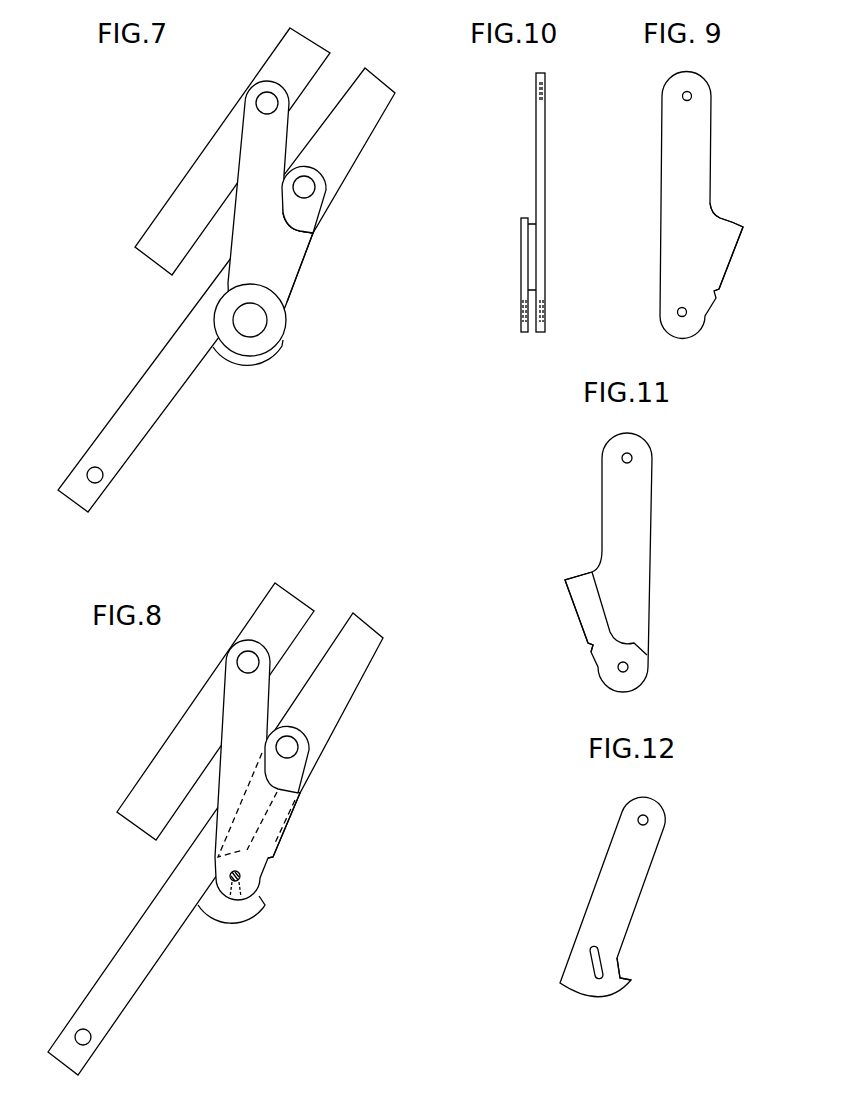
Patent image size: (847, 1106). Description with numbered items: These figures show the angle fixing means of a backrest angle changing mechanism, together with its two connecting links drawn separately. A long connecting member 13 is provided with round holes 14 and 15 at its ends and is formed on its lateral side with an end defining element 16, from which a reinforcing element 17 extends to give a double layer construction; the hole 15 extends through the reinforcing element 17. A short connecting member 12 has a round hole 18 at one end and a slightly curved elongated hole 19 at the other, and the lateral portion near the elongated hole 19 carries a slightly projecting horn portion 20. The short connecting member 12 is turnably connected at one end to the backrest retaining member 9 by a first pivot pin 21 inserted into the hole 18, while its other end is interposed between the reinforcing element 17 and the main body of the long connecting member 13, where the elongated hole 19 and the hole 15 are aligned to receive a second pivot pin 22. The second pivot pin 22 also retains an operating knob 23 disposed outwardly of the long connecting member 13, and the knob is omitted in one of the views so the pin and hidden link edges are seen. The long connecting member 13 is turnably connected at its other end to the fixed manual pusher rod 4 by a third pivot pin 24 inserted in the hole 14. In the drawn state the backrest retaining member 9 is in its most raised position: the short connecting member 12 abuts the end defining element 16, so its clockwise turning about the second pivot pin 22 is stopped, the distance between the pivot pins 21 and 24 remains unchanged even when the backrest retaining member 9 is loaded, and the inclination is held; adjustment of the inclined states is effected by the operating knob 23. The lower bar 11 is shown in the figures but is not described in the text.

In FIG. 7, the manual pusher rod 4 is at (170, 195).
In FIG. 8, the manual pusher rod 4 is at (160, 750).
In FIG. 7, the backrest retaining member 9 is at (383, 123).
In FIG. 8, the backrest retaining member 9 is at (365, 668).
In FIG. 7, the lever bar 11 is at (89, 473).
In FIG. 8, the lever bar 11 is at (76, 1036).
In FIG. 7, the short connecting member 12 is at (322, 214).
In FIG. 8, the short connecting member 12 is at (303, 778).
In FIG. 12, the short connecting member 12 is at (672, 852).
In FIG. 7, the long connecting member 13 is at (236, 151).
In FIG. 8, the long connecting member 13 is at (219, 712).
In FIG. 10, the long connecting member 13 is at (561, 151).
In FIG. 9, the long connecting member 13 is at (737, 138).
In FIG. 11, the long connecting member 13 is at (667, 478).
In FIG. 10, the round hole 14 is at (537, 96).
In FIG. 9, the round hole 14 is at (690, 95).
In FIG. 11, the round hole 14 is at (622, 457).
In FIG. 10, the round hole 15 is at (521, 307).
In FIG. 9, the round hole 15 is at (678, 315).
In FIG. 11, the round hole 15 is at (629, 667).
In FIG. 7, the end defining element 16 is at (303, 265).
In FIG. 8, the end defining element 16 is at (290, 825).
In FIG. 10, the end defining element 16 is at (530, 246).
In FIG. 9, the end defining element 16 is at (730, 263).
In FIG. 11, the end defining element 16 is at (575, 612).
In FIG. 10, the reinforcing element 17 is at (524, 276).
In FIG. 11, the reinforcing element 17 is at (605, 655).
In FIG. 12, the round hole 18 is at (639, 819).
In FIG. 12, the elongated hole 19 is at (590, 953).
In FIG. 12, the horn portion 20 is at (630, 980).
In FIG. 7, the first pivot pin 21 is at (306, 188).
In FIG. 8, the first pivot pin 21 is at (289, 748).
In FIG. 7, the second pivot pin 22 is at (258, 320).
In FIG. 8, the second pivot pin 22 is at (241, 877).
In FIG. 7, the operating knob 23 is at (216, 318).
In FIG. 7, the third pivot pin 24 is at (265, 98).
In FIG. 8, the third pivot pin 24 is at (243, 656).